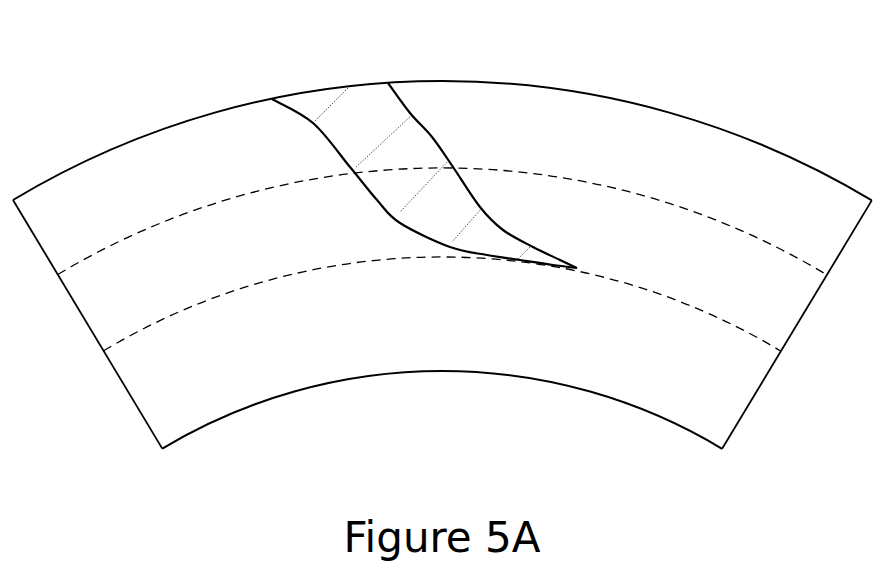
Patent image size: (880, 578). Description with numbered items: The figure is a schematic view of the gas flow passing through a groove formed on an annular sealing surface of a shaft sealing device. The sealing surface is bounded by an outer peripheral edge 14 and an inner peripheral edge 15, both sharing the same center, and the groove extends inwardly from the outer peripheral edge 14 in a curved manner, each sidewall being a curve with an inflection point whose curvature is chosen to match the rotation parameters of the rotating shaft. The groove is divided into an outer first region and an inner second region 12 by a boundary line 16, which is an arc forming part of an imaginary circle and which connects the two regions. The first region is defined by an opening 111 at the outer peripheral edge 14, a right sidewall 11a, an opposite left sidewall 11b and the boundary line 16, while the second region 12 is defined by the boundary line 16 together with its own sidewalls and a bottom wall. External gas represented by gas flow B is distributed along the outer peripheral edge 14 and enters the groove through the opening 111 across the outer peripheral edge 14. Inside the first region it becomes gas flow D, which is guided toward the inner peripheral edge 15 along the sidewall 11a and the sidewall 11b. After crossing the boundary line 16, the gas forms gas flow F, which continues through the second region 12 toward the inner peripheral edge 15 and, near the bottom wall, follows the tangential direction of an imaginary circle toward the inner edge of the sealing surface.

The opening 111 is at (348, 88).
The sidewall 11a is at (424, 117).
The sidewall 11b is at (322, 131).
The second region 12 is at (465, 204).
The outer peripheral edge 14 is at (540, 88).
The inner peripheral edge 15 is at (439, 374).
The boundary line 16 is at (388, 170).
The gas flow B is at (340, 80).
The gas flow D is at (402, 158).
The gas flow F is at (500, 236).